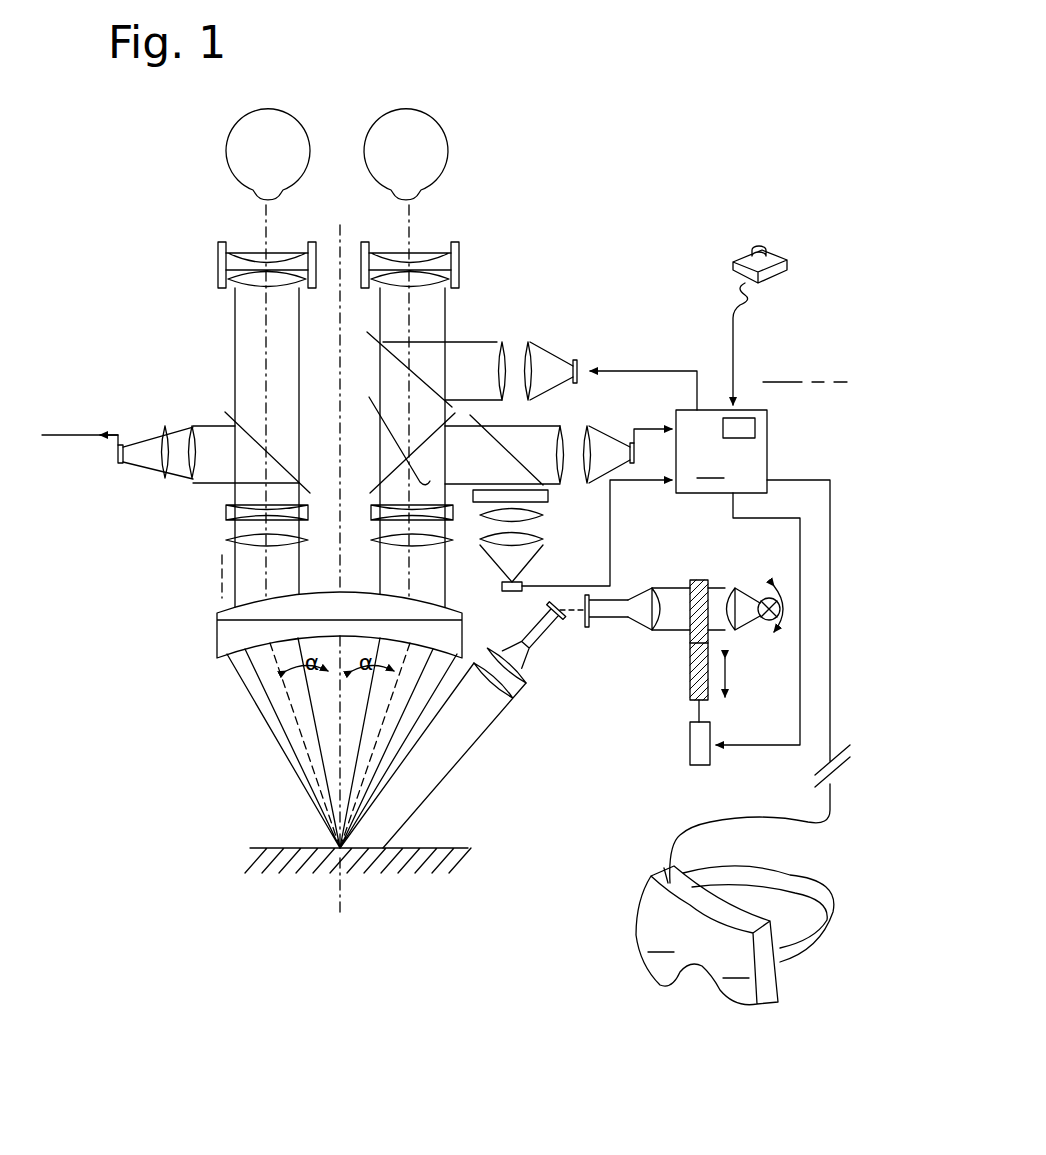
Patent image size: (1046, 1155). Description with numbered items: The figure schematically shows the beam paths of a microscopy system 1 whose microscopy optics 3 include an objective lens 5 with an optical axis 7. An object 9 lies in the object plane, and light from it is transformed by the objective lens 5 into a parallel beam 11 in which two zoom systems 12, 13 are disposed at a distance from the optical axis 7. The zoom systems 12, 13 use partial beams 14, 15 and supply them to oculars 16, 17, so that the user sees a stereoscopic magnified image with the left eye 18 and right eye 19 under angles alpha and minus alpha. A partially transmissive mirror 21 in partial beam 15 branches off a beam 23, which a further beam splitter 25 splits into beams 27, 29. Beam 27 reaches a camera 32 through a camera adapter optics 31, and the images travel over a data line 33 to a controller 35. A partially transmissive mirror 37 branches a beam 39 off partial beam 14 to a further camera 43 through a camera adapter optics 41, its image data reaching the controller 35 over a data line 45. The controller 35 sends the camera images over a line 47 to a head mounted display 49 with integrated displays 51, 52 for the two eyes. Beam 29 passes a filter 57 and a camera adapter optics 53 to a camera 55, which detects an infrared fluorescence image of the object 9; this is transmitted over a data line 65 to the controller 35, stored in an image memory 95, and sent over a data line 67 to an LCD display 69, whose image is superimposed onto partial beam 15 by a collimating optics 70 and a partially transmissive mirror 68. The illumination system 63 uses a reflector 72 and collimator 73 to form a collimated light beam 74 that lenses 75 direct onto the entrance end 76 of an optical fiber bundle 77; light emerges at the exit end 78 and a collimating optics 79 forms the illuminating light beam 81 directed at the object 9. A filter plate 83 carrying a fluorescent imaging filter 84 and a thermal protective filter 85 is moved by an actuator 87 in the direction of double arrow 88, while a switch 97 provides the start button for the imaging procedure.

The microscopy system 1 is at (637, 168).
The microscopy optics 3 is at (135, 284).
The objective lens 5 is at (216, 635).
The optical axis 7 is at (343, 895).
The object 9 is at (262, 848).
The parallel beam 11 is at (222, 585).
The zoom system 12 is at (222, 500).
The zoom system 13 is at (366, 500).
The partial beam 14 is at (235, 306).
The partial beam 15 is at (446, 302).
The ocular 16 is at (218, 250).
The ocular 17 is at (456, 255).
The left eye 18 is at (285, 123).
The right eye 19 is at (425, 123).
The partially transmissive mirror 21 is at (392, 468).
The beam 23 is at (386, 424).
The beam splitter 25 is at (504, 447).
The beam 27 is at (537, 425).
The beam 29 is at (484, 490).
The camera adapter optics 31 is at (556, 417).
The camera 32 is at (632, 443).
The data line 33 is at (645, 427).
The controller 35 is at (721, 451).
The partially transmissive mirror 37 is at (283, 465).
The beam 39 is at (212, 423).
The camera adapter optics 41 is at (195, 418).
The camera 43 is at (122, 465).
The data line 45 is at (110, 432).
The line 47 is at (789, 480).
The head mounted display 49 is at (786, 992).
The integrated display 51 is at (661, 935).
The integrated display 52 is at (736, 961).
The camera adapter optics 53 is at (556, 502).
The camera 55 is at (509, 592).
The filter 57 is at (476, 503).
The illumination system 63 is at (592, 704).
The data line 65 is at (610, 528).
The data line 67 is at (633, 370).
The partially transmissive mirror 68 is at (392, 353).
The LCD display 69 is at (578, 362).
The collimating optics 70 is at (497, 335).
The reflector 72 is at (785, 593).
The collimator 73 is at (733, 580).
The collimated light beam 74 is at (721, 580).
The lens 75 is at (657, 628).
The entrance end 76 is at (632, 632).
The optical fiber bundle 77 is at (598, 620).
The exit end 78 is at (527, 655).
The collimating optics 79 is at (534, 677).
The illuminating light beam 81 is at (458, 750).
The filter plate 83 is at (698, 578).
The filter 84 is at (684, 588).
The filter 85 is at (692, 685).
The actuator 87 is at (687, 752).
The double arrow 88 is at (727, 687).
The image memory 95 is at (757, 428).
The switch 97 is at (775, 280).